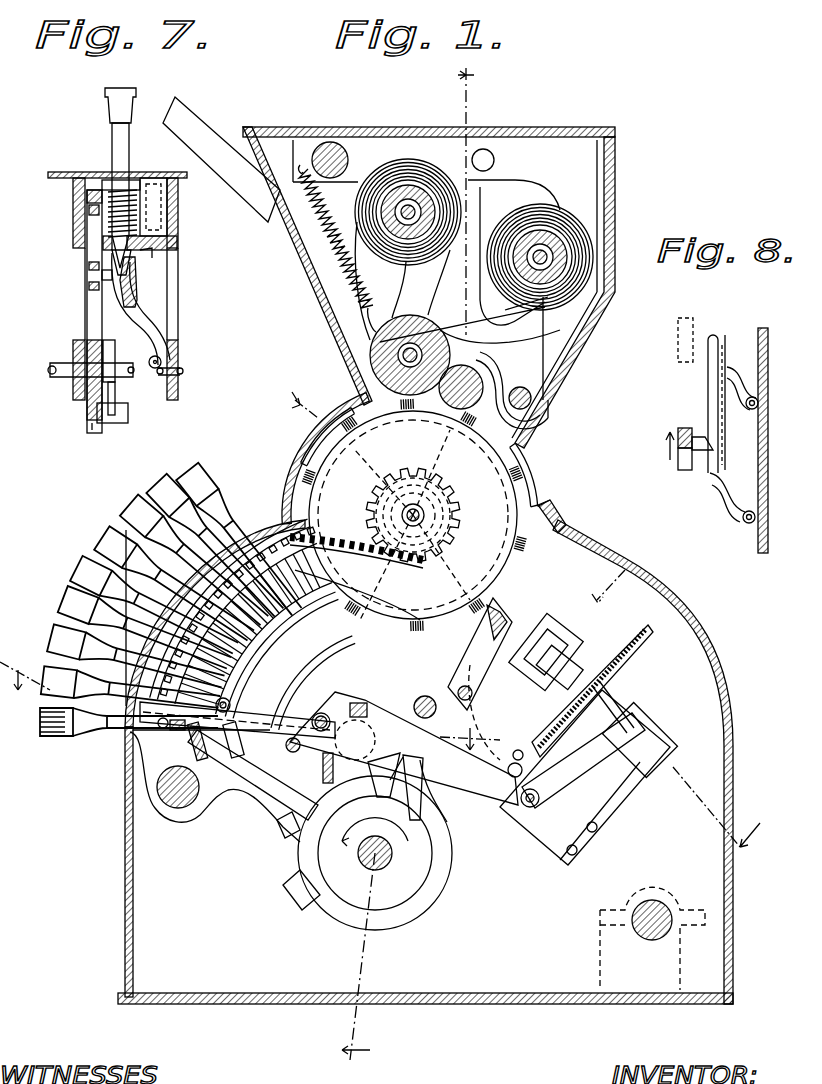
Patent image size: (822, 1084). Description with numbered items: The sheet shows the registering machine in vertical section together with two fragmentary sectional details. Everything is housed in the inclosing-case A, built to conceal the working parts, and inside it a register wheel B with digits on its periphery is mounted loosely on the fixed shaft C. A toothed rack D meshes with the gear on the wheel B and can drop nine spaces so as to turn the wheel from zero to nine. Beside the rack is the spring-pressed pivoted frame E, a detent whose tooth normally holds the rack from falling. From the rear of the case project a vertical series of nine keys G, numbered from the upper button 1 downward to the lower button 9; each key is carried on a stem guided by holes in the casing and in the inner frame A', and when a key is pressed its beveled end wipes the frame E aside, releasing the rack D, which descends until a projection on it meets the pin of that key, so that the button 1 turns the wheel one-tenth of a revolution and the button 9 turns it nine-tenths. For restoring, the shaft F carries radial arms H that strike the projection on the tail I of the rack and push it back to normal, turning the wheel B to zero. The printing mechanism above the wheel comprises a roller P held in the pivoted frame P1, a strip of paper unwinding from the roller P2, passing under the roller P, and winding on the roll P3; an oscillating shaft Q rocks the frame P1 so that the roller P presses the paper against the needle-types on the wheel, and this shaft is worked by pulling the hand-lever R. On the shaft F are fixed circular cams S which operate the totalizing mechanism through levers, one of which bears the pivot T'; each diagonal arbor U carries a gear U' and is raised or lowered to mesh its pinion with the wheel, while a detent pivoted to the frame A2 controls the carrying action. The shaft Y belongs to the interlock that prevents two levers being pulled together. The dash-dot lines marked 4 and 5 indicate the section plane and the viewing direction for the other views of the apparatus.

In FIG. 1, the inclosing-case A is at (440, 565).
In FIG. 7, the frame A' is at (122, 286).
In FIG. 1, the frame A2 is at (400, 731).
In FIG. 1, the wheel B is at (413, 515).
In FIG. 1, the fixed shaft C is at (429, 514).
In FIG. 7, the toothed rack D is at (79, 311).
In FIG. 1, the toothed rack D is at (281, 637).
In FIG. 8, the toothed rack D is at (675, 394).
In FIG. 7, the pivoted frame E is at (138, 312).
In FIG. 1, the pivoted frame E is at (290, 661).
In FIG. 8, the pivoted frame E is at (718, 395).
In FIG. 1, the shaft F is at (392, 856).
In FIG. 7, the key G is at (108, 113).
In FIG. 1, the key G is at (155, 616).
In FIG. 1, the radial arm H is at (277, 824).
In FIG. 7, the tail I is at (88, 443).
In FIG. 1, the tail I is at (404, 748).
In FIG. 1, the roller P is at (372, 346).
In FIG. 1, the frame P1 is at (519, 357).
In FIG. 1, the roller P2 is at (486, 290).
In FIG. 1, the roll P3 is at (399, 212).
In FIG. 1, the oscillating shaft Q is at (465, 387).
In FIG. 1, the hand-lever R is at (221, 159).
In FIG. 1, the circular cam S is at (440, 876).
In FIG. 1, the pivot T' is at (576, 760).
In FIG. 1, the diagonal arbor U is at (635, 729).
In FIG. 1, the gear U' is at (592, 691).
In FIG. 1, the shaft Y is at (652, 902).
In FIG. 1, the upper button 1 is at (242, 536).
In FIG. 1, the lower button 9 is at (119, 722).
In FIG. 1, the section line 4 is at (284, 566).
In FIG. 1, the section line 5 is at (415, 619).